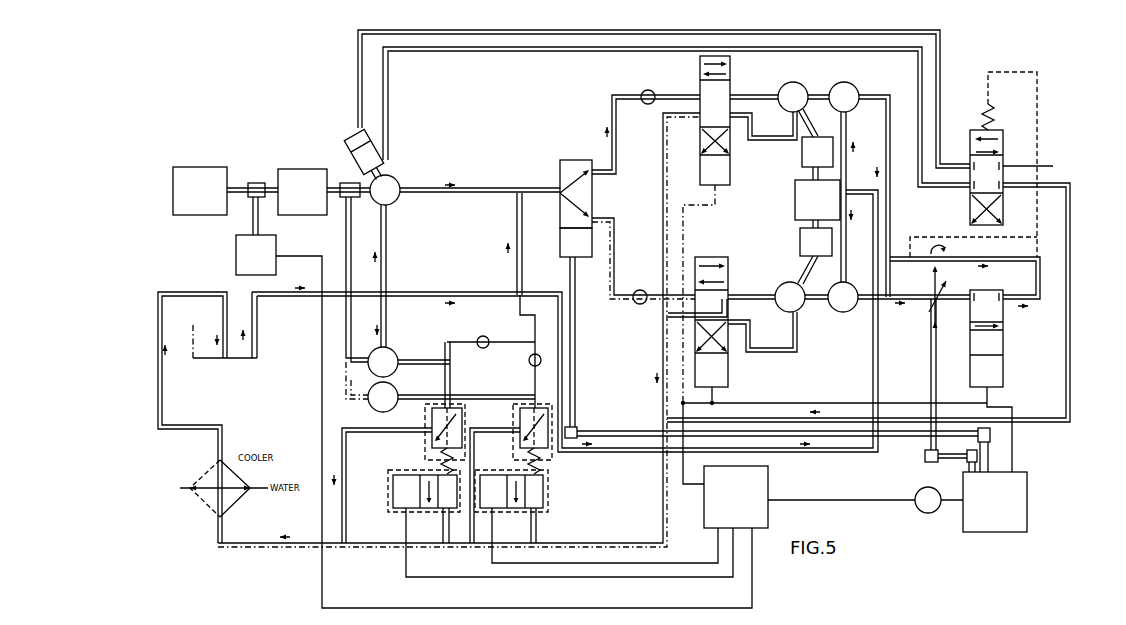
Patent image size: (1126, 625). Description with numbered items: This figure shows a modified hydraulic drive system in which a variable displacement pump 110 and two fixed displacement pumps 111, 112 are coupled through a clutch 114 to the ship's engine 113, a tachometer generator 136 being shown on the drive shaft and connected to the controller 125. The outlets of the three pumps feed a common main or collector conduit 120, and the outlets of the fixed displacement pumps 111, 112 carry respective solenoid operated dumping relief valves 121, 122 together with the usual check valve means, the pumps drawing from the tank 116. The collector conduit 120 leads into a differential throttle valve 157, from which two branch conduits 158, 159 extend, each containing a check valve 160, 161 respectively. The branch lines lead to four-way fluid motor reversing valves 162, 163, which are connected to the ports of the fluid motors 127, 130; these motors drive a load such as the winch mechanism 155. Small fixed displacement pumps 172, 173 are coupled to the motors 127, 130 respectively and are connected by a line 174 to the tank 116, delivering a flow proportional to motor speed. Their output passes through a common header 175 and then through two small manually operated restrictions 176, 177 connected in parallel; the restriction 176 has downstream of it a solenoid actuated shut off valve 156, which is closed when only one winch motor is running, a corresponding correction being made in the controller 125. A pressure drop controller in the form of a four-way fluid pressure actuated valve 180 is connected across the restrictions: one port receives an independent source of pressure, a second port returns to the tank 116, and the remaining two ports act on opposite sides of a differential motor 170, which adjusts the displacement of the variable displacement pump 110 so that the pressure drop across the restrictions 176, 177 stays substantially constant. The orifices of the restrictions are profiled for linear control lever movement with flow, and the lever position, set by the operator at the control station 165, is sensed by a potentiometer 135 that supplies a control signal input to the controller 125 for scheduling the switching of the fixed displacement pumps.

The variable displacement pump 110 is at (391, 203).
The fixed displacement pump 111 is at (397, 358).
The fixed displacement pump 112 is at (397, 392).
The engine 113 is at (222, 168).
The clutch 114 is at (305, 169).
The tank 116 is at (257, 330).
The common main conduit 120 is at (522, 189).
The solenoid operated dumping relief valve 121 is at (424, 457).
The solenoid operated dumping relief valve 122 is at (541, 470).
The controller 125 is at (768, 486).
The hydraulic motor 127 is at (793, 82).
The fluid motor 130 is at (790, 312).
The potentiometer 135 is at (927, 513).
The tachometer generator 136 is at (276, 247).
The winch mechanism 155 is at (795, 206).
The solenoid actuated shut off valve 156 is at (1003, 366).
The differential throttle valve 157 is at (594, 200).
The branch conduit 158 is at (614, 142).
The branch conduit 159 is at (611, 263).
The check valve 160 is at (650, 90).
The check valve 161 is at (633, 302).
The four-way fluid motor reversing valve 162 is at (730, 80).
The four-way fluid motor reversing valve 163 is at (729, 370).
The control station 165 is at (1027, 521).
The differential motor 170 is at (343, 147).
The small fixed displacement pump 172 is at (853, 85).
The small fixed displacement pump 173 is at (841, 313).
The return line 174 is at (872, 362).
The common header 175 is at (891, 301).
The manually operated restriction 176 is at (941, 306).
The manually operated restriction 177 is at (973, 247).
The four-way fluid pressure actuated valve 180 is at (1003, 134).